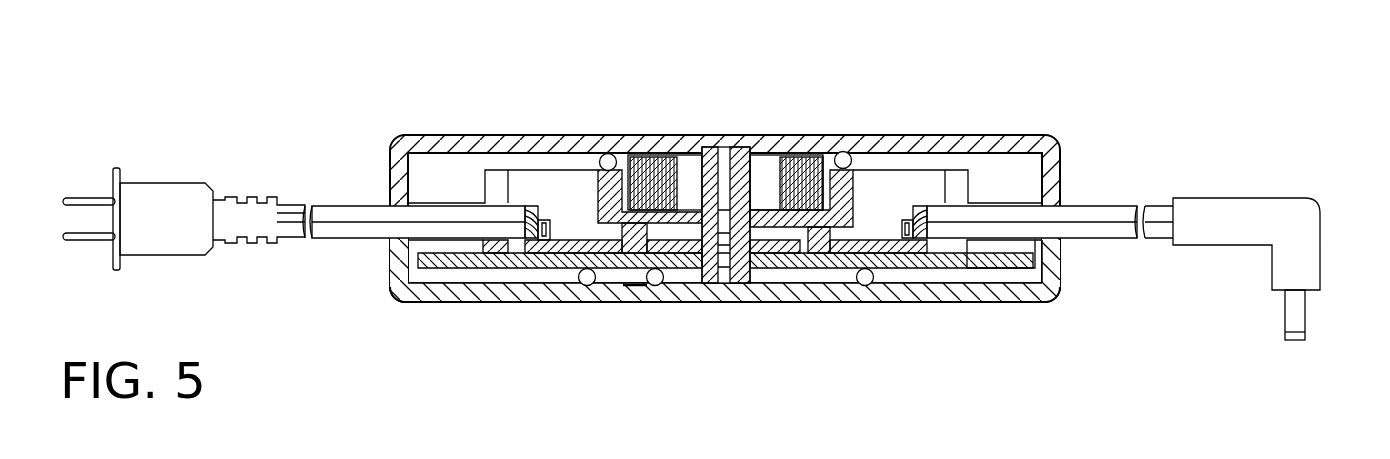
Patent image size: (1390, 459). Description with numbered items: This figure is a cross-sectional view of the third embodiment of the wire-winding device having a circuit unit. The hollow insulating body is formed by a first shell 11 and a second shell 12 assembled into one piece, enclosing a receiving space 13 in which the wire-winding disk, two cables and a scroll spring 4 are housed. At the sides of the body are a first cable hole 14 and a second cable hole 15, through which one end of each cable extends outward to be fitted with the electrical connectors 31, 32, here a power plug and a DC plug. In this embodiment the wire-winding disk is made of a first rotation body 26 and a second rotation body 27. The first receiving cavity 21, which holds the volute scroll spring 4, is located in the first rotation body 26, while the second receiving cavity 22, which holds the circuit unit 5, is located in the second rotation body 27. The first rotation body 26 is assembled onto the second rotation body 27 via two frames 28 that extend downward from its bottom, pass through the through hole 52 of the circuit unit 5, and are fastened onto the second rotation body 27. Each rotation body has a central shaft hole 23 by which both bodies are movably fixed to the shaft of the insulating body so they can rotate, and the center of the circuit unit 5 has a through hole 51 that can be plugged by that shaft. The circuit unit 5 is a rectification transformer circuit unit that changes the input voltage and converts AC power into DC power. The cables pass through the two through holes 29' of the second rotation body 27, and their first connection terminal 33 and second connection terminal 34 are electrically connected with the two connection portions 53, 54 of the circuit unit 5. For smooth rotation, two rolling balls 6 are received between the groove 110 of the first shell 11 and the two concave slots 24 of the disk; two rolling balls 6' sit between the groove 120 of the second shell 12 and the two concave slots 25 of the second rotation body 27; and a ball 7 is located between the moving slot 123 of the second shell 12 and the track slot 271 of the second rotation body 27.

The scroll spring 4 is at (682, 156).
The circuit unit 5 is at (792, 268).
The rolling balls 6 is at (602, 115).
The rolling balls 6' is at (575, 325).
The ball 7 is at (657, 287).
The first shell 11 is at (1040, 148).
The second shell 12 is at (398, 300).
The receiving space 13 is at (426, 165).
The first cable hole 14 is at (396, 203).
The second cable hole 15 is at (1062, 196).
The first receiving cavity 21 is at (826, 200).
The second receiving cavity 22 is at (938, 170).
The shaft hole 23 is at (769, 255).
The concave slots 24 is at (853, 190).
The concave slots 25 is at (898, 262).
The first rotation body 26 is at (598, 190).
The second rotation body 27 is at (1020, 300).
The frames 28 is at (821, 258).
The through holes 29' is at (1085, 264).
The electrical connector 31 is at (127, 198).
The electrical connector 32 is at (1318, 237).
The first connection terminal 33 is at (536, 240).
The second connection terminal 34 is at (975, 262).
The through hole 51 is at (700, 265).
The through hole 52 is at (619, 265).
The connection portion 53 is at (549, 245).
The connection portion 54 is at (963, 262).
The groove 110 is at (848, 157).
The groove 120 is at (866, 287).
The moving slot 123 is at (637, 289).
The track slot 271 is at (678, 268).